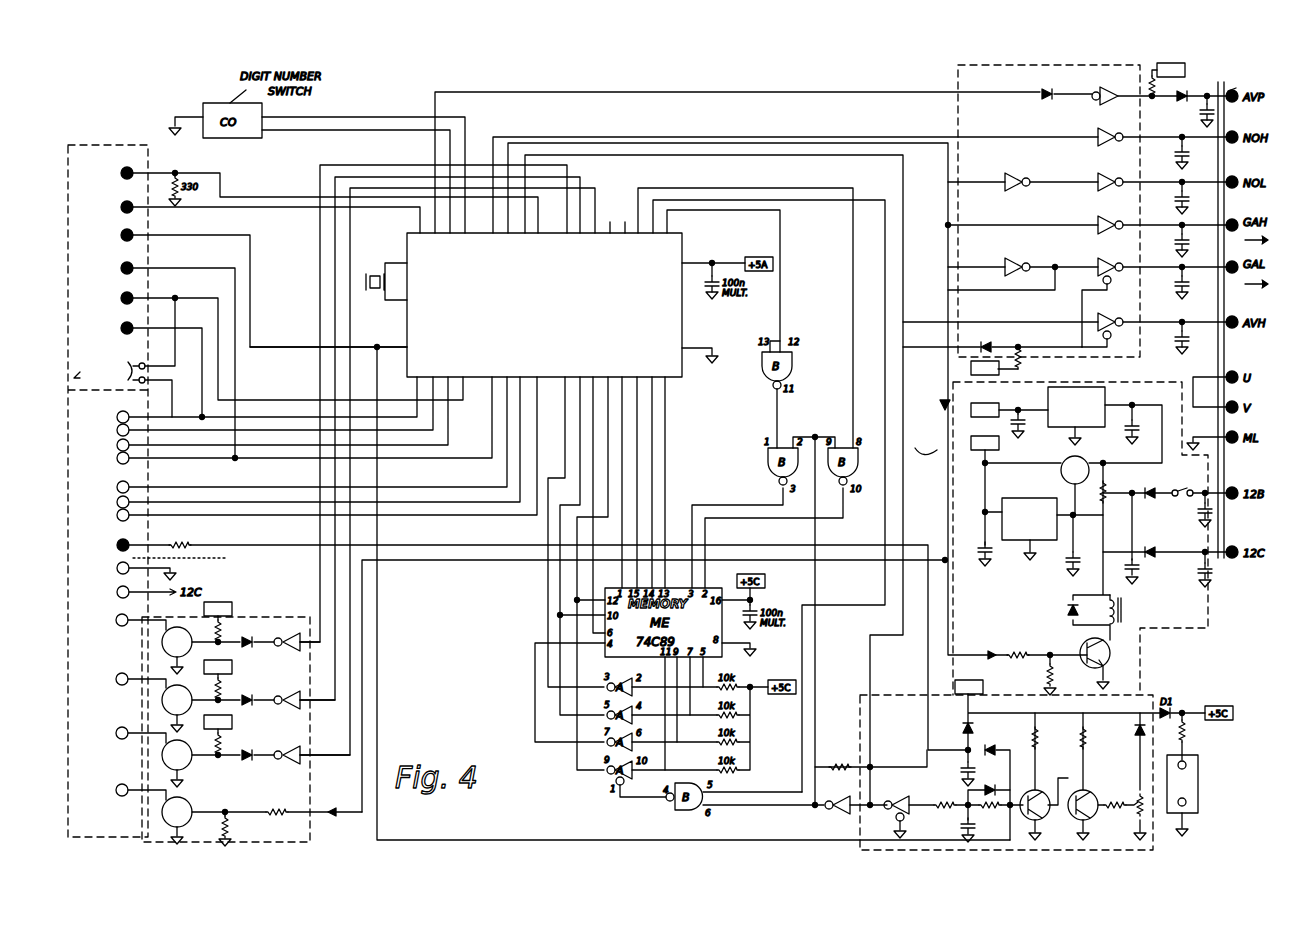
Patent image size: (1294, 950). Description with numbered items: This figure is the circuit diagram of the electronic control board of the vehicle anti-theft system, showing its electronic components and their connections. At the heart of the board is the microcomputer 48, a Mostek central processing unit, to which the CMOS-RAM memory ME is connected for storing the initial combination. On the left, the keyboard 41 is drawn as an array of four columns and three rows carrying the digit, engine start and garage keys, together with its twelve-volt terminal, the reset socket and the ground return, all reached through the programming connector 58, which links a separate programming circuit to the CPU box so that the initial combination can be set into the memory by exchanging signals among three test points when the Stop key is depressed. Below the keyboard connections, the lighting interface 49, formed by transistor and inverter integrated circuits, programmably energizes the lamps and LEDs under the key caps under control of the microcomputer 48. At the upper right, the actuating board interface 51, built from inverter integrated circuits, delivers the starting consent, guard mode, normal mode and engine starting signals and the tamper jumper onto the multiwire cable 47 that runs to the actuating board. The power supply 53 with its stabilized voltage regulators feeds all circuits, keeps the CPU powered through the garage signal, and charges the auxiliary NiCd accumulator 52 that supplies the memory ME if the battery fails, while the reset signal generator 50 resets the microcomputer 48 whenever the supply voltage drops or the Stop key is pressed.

The keyboard 41 is at (227, 559).
The multiwire cable 47 is at (1218, 92).
The microcomputer 48 is at (402, 253).
The lighting interface 49 is at (320, 841).
The reset signal generator 50 is at (1153, 680).
The actuating board interface 51 is at (958, 73).
The auxiliary NiCd accumulator 52 is at (1190, 786).
The power supply 53 is at (1200, 628).
The programming connector 58 is at (146, 144).